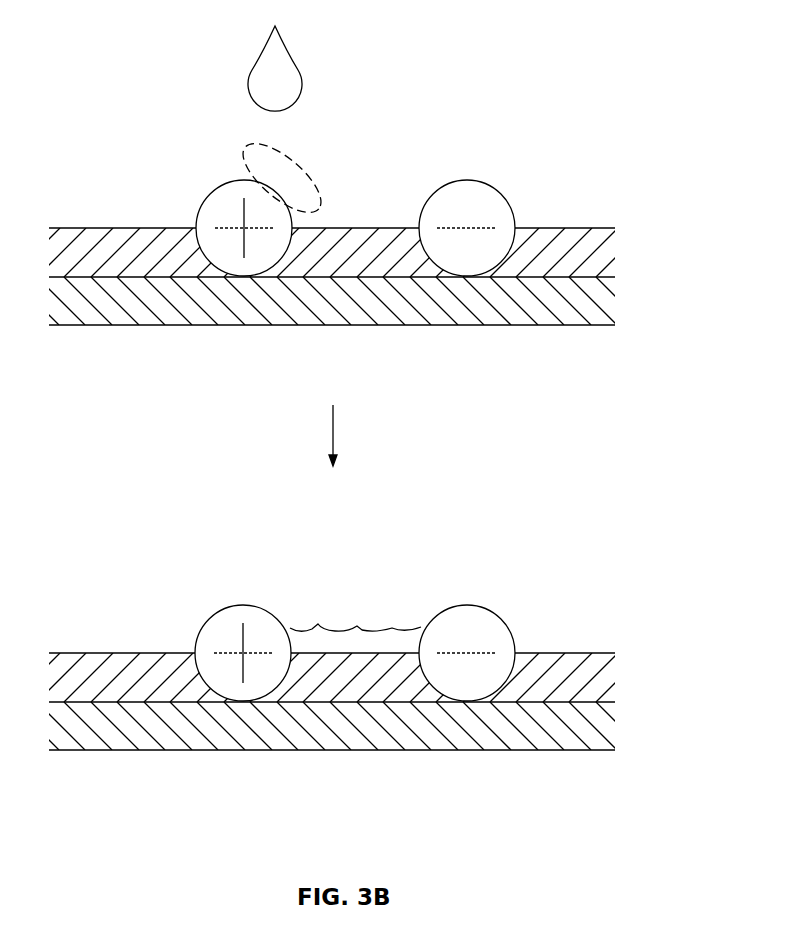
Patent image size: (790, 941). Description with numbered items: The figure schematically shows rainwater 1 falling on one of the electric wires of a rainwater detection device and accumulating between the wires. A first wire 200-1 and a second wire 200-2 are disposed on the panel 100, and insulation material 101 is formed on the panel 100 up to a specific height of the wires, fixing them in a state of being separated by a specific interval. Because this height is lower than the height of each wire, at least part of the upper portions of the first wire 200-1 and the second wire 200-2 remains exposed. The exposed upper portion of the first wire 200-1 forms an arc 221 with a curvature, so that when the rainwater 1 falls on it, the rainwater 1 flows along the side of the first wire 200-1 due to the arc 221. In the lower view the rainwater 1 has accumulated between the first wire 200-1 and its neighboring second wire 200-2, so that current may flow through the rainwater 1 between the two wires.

The rainwater 1 is at (277, 63).
The arc 221 is at (314, 177).
The first wire 200-1 is at (241, 180).
The second wire 200-2 is at (466, 180).
The insulation material 101 is at (603, 247).
The panel 100 is at (595, 308).